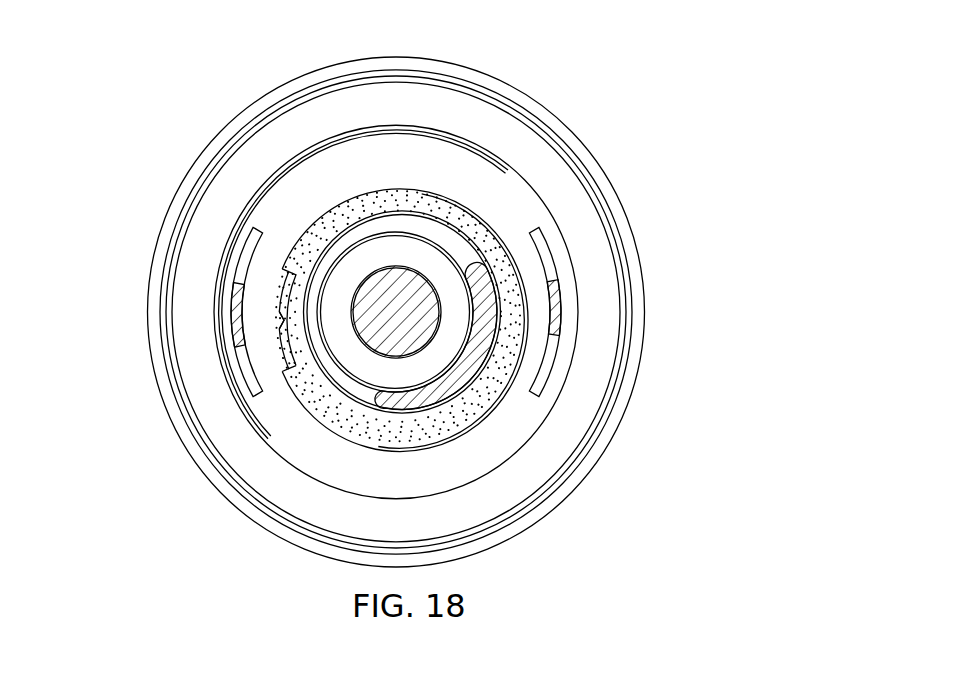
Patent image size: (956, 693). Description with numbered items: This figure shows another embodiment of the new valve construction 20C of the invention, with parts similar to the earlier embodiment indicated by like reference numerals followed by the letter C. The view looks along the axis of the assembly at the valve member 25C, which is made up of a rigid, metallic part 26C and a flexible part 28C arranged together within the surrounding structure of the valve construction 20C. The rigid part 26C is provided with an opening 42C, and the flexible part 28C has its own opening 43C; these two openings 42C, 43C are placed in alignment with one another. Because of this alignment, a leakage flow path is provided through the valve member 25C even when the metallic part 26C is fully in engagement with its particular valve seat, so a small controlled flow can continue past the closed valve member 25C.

The valve construction 20C is at (664, 116).
The valve member 25C is at (313, 207).
The rigid part 26C is at (277, 282).
The flexible part 28C is at (381, 198).
The opening 42C is at (272, 313).
The opening 43C is at (283, 364).